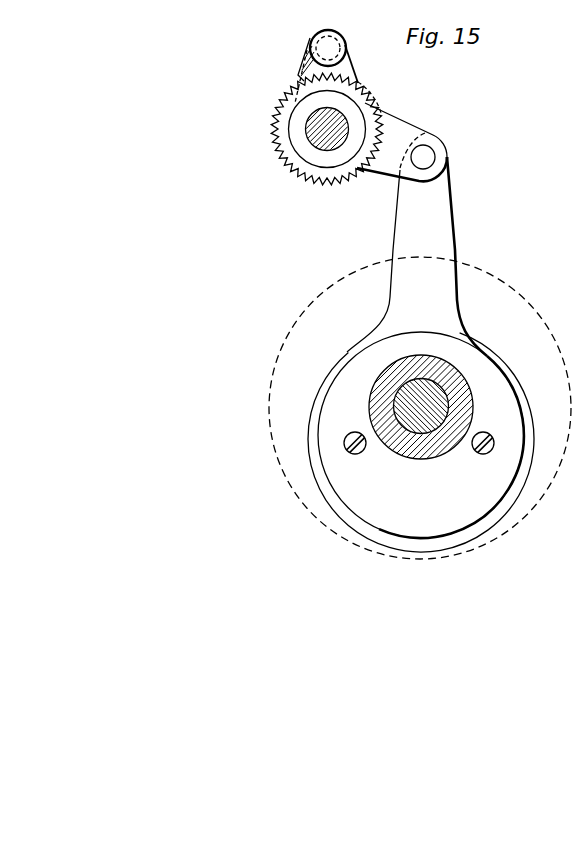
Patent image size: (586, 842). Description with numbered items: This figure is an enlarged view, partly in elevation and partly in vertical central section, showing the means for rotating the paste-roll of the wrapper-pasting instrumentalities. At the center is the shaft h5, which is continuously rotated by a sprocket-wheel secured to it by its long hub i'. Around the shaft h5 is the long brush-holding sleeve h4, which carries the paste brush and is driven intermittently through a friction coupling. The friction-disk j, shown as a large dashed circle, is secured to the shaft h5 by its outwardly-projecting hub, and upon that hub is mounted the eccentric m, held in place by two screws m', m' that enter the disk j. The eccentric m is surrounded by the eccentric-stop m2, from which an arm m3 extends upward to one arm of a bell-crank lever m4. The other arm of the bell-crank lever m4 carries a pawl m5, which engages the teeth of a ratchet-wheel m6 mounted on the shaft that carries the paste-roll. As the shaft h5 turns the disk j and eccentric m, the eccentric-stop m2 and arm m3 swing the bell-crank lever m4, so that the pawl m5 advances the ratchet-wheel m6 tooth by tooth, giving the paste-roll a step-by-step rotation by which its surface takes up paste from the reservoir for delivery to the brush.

The friction-disk j is at (527, 298).
The eccentric m is at (421, 442).
The screws m' is at (419, 453).
The eccentric-stop m2 is at (462, 537).
The arm m3 is at (437, 200).
The bell-crank lever m4 is at (400, 134).
The pawl m5 is at (302, 70).
The ratchet-wheel m6 is at (278, 110).
The hub of sprocket-wheel i' is at (296, 134).
The brush-holding sleeve h4 is at (466, 412).
The shaft h5 is at (445, 392).